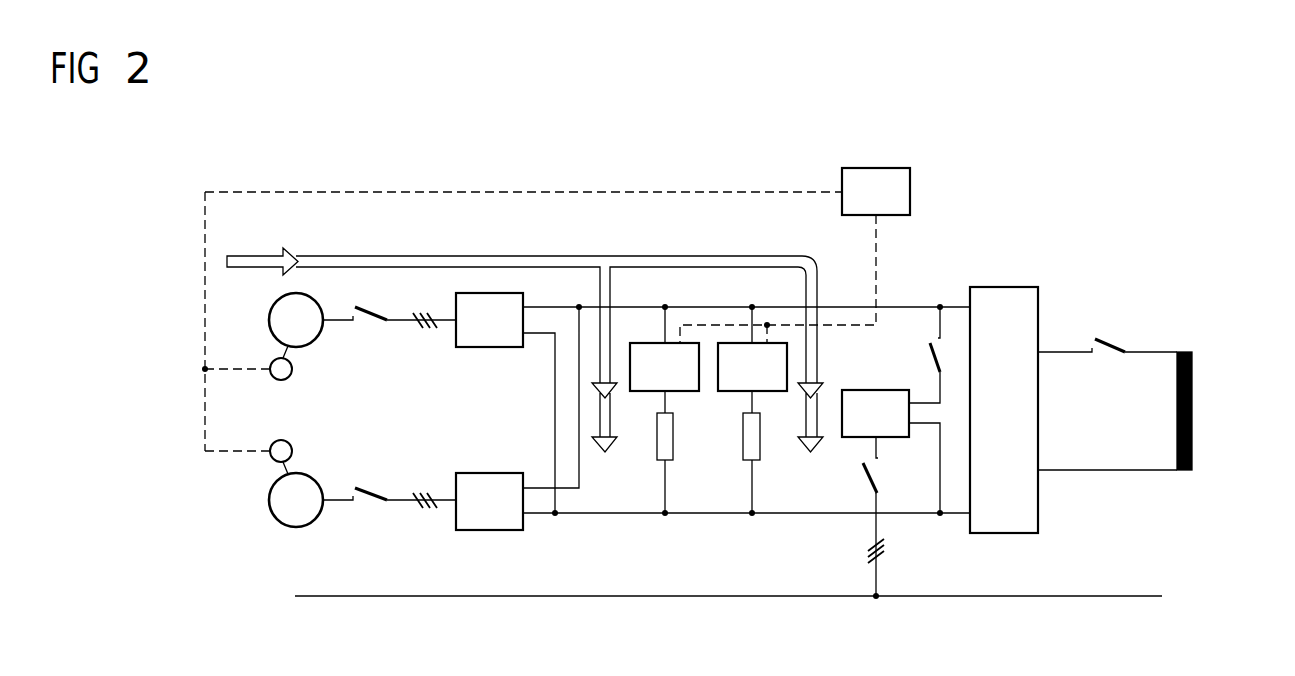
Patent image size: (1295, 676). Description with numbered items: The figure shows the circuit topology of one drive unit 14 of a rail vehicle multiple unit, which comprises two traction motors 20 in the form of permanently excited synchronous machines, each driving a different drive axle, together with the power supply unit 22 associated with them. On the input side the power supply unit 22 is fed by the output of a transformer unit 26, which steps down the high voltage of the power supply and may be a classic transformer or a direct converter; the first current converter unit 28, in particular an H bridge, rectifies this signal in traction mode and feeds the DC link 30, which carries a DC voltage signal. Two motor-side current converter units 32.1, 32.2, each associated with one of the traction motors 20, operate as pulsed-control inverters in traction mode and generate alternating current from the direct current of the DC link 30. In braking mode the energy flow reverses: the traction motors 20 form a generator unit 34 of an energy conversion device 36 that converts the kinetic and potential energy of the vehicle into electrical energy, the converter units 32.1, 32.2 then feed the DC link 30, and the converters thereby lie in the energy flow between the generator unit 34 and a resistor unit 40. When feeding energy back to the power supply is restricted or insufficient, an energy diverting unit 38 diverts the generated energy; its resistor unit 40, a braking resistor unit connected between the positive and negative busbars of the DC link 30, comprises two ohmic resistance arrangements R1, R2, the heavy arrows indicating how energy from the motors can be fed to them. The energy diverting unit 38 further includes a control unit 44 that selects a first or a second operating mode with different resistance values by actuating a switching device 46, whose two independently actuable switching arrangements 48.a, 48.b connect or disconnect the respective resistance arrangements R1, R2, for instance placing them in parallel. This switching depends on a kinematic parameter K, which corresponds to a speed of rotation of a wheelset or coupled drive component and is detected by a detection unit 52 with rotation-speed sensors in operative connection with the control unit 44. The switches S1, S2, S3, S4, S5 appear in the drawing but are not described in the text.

The kinematic parameter K is at (352, 192).
The drive unit 14 is at (415, 543).
The traction motors 20 is at (269, 333).
The power supply unit 22 is at (910, 272).
The transformer unit 26 is at (1215, 343).
The first current converter unit 28 is at (1010, 287).
The DC link 30 is at (793, 518).
The current converter unit 32.1 is at (490, 293).
The current converter unit 32.2 is at (487, 530).
The generator unit 34 is at (263, 474).
The energy conversion device 36 is at (673, 247).
The energy diverting unit 38 is at (685, 543).
The resistor unit 40 is at (712, 480).
The control unit 44 is at (875, 168).
The switching device 46 is at (710, 320).
The switching arrangement 48.a is at (642, 343).
The switching arrangement 48.b is at (776, 343).
The detection unit 52 is at (272, 412).
The switch S1 is at (371, 320).
The switch S2 is at (368, 490).
The switch S3 is at (1112, 340).
The switch S4 is at (928, 360).
The switch S5 is at (880, 475).
The resistance arrangement R1 is at (677, 463).
The resistance arrangement R2 is at (764, 463).